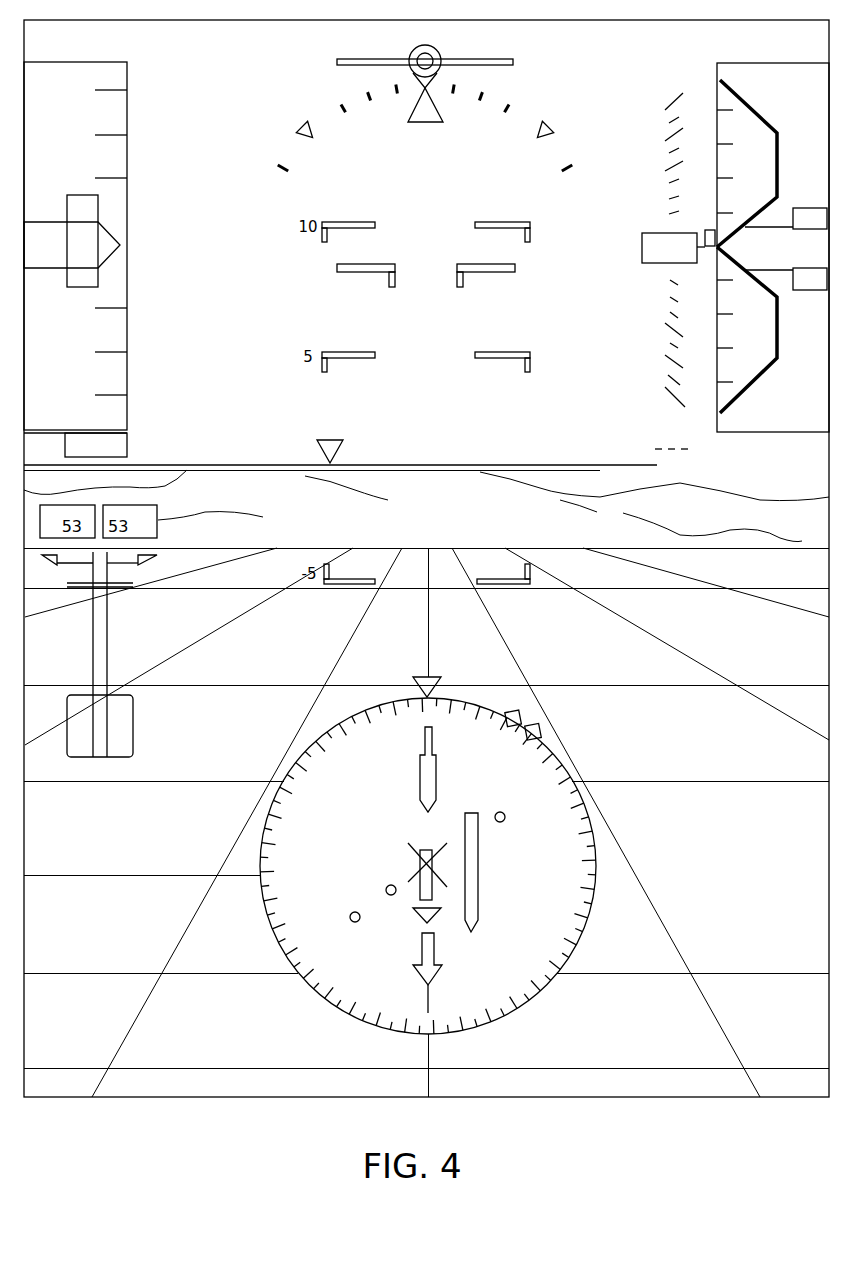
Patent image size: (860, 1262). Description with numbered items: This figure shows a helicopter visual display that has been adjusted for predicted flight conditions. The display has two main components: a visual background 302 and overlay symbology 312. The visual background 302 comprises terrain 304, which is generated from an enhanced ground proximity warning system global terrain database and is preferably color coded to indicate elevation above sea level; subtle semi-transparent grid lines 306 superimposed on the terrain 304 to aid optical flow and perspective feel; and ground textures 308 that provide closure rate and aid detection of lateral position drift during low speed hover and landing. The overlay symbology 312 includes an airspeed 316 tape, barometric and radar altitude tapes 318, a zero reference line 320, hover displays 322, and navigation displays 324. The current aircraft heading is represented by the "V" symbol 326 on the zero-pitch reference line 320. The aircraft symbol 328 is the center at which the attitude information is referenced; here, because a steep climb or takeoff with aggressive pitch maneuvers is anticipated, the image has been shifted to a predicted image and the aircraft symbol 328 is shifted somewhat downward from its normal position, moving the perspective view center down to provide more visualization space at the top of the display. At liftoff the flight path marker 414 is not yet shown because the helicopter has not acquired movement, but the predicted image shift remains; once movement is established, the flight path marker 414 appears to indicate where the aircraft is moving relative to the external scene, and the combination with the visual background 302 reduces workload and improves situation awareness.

The visual background 302 is at (295, 54).
The terrain 304 is at (305, 476).
The grid lines 306 is at (225, 973).
The ground textures 308 is at (188, 932).
The overlay symbology 312 is at (457, 96).
The airspeed 316 is at (128, 89).
The barometric and radar altitude tapes 318 is at (717, 82).
The zero reference line 320 is at (548, 465).
The hover displays 322 is at (162, 494).
The navigation displays 324 is at (258, 835).
The "V" symbol 326 is at (425, 452).
The aircraft symbol 328 is at (487, 263).
The flight path marker 414 is at (387, 59).